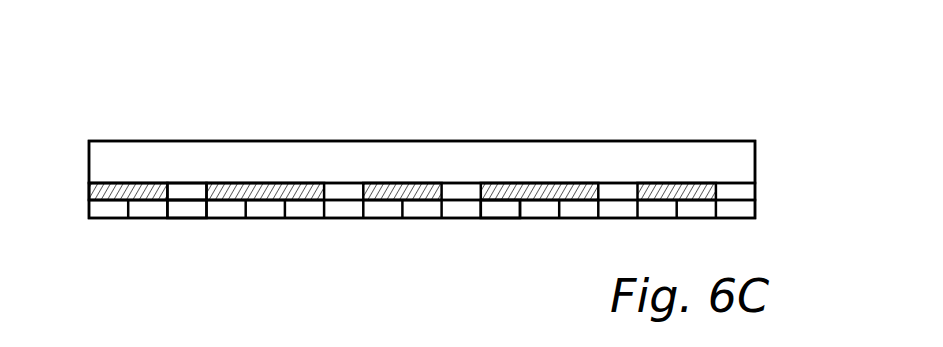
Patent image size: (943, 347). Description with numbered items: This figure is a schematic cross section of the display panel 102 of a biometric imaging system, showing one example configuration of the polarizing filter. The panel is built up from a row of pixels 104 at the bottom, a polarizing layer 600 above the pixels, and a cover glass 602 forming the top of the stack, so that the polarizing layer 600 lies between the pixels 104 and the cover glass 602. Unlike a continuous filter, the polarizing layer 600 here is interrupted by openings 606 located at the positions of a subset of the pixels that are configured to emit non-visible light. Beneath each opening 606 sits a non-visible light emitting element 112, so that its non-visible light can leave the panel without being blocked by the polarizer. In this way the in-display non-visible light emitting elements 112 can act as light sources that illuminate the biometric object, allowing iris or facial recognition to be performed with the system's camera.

The display panel 102 is at (652, 109).
The cover glass 602 is at (755, 150).
The polarizing layer 600 is at (714, 189).
The opening 606 is at (193, 190).
The pixels 104 is at (110, 208).
The non-visible light emitting element 112 is at (198, 210).